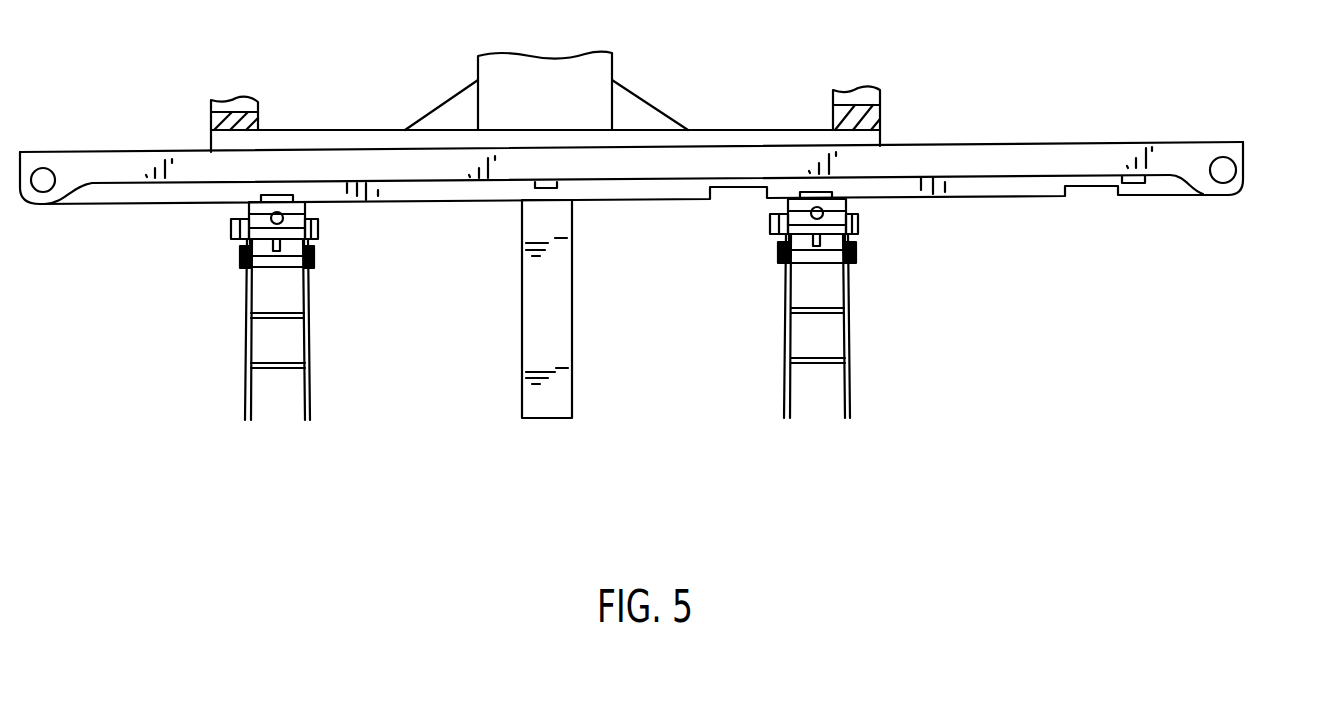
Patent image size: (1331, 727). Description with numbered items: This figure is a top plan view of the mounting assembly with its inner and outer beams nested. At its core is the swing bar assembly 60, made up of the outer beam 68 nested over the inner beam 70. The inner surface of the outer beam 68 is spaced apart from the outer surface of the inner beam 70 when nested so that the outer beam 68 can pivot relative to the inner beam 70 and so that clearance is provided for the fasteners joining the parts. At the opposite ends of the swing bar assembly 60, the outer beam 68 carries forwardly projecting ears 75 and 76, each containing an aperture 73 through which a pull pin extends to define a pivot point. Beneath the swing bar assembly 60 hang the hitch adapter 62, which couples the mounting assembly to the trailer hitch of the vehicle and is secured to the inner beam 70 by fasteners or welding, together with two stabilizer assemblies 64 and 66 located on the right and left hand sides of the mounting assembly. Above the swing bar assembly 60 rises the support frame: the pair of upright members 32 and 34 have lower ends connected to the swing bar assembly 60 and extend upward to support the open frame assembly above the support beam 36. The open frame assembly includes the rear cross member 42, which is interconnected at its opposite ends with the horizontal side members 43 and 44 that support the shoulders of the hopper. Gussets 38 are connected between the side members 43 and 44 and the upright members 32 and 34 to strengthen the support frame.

The upright member 32 is at (209, 128).
The upright member 34 is at (876, 118).
The support beam 36 is at (603, 70).
The gussets 38 is at (448, 117).
The rear cross member 42 is at (738, 133).
The side member 43 is at (254, 110).
The side member 44 is at (862, 98).
The swing bar assembly 60 is at (1048, 142).
The hitch adapter 62 is at (568, 312).
The stabilizer assembly 64 is at (234, 301).
The stabilizer assembly 66 is at (887, 316).
The outer beam 68 is at (955, 152).
The inner beam 70 is at (980, 196).
The apertures 73 is at (46, 177).
The forwardly projecting ear 75 is at (56, 205).
The forwardly projecting ear 76 is at (1201, 184).